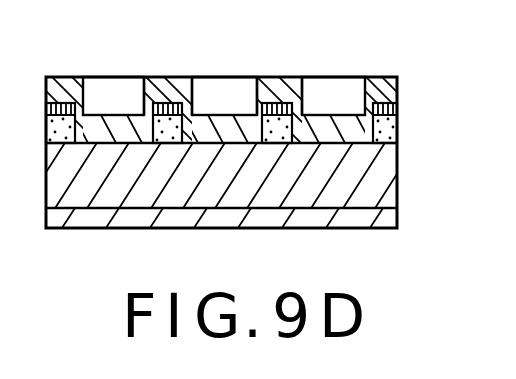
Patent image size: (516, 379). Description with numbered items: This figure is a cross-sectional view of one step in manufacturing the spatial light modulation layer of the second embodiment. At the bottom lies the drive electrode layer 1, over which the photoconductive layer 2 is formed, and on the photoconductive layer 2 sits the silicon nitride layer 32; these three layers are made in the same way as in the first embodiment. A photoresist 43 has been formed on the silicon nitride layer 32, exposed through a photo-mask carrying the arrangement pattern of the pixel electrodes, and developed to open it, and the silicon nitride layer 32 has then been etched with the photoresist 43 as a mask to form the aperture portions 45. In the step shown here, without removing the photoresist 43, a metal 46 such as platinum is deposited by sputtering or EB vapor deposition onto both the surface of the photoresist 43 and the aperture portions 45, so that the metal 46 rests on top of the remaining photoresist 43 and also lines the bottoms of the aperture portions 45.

The drive electrode layer 1 is at (243, 227).
The photoconductive layer 2 is at (93, 185).
The silicon nitride layer 32 is at (392, 132).
The photoresist 43 is at (291, 87).
The aperture portions 45 is at (230, 90).
The metal 46 is at (170, 88).